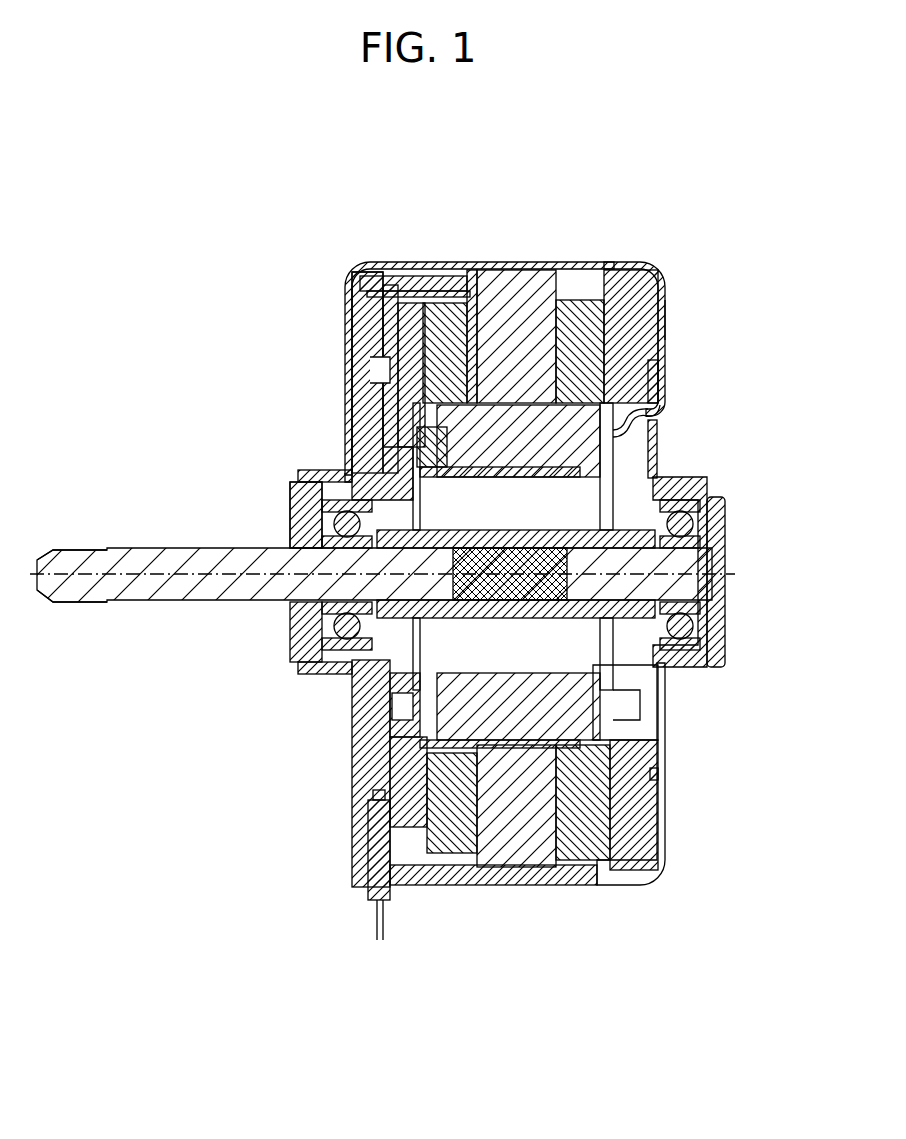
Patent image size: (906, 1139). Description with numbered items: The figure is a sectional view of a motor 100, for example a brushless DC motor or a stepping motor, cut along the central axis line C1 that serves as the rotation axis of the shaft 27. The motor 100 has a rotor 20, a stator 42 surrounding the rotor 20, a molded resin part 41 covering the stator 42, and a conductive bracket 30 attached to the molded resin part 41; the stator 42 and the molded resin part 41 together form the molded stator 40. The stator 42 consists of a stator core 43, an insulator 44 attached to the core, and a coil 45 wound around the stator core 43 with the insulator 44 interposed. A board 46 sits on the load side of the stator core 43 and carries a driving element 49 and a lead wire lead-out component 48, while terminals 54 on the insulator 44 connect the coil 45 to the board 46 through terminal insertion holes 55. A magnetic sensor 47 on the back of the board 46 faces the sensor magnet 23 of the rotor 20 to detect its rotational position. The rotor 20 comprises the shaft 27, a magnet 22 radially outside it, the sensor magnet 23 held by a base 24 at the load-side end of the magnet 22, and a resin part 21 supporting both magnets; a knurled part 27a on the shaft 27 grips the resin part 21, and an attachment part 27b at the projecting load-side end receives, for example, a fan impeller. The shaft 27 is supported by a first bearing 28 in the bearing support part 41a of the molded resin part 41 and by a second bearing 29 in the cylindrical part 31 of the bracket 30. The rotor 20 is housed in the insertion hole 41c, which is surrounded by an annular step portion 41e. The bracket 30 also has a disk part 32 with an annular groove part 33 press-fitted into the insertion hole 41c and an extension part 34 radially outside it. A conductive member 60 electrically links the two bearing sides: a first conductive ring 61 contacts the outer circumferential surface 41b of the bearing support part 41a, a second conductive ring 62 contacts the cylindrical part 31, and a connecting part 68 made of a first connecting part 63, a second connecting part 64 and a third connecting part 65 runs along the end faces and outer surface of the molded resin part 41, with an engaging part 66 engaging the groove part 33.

The motor 100 is at (730, 242).
The rotor 20 is at (225, 535).
The resin part 21 is at (335, 622).
The magnet 22 is at (507, 718).
The sensor magnet 23 is at (400, 732).
The base 24 is at (656, 752).
The shaft 27 is at (132, 600).
The knurled part 27a is at (605, 598).
The attachment part 27b is at (88, 550).
The first bearing 28 is at (300, 512).
The second bearing 29 is at (722, 502).
The bracket 30 is at (672, 460).
The cylindrical part 31 is at (705, 480).
The disk part 32 is at (658, 455).
The groove part 33 is at (660, 362).
The extension part 34 is at (662, 400).
The molded stator 40 is at (356, 320).
The molded resin part 41 is at (362, 336).
The bearing support part 41a is at (300, 492).
The outer circumferential surface 41b is at (333, 470).
The insertion hole 41c is at (610, 702).
The step portion 41e is at (300, 668).
The stator 42 is at (665, 302).
The stator core 43 is at (512, 300).
The insulator 44 is at (585, 300).
The coil 45 is at (592, 808).
The board 46 is at (400, 760).
The magnetic sensor 47 is at (400, 708).
The lead wire lead-out component 48 is at (370, 852).
The driving element 49 is at (362, 405).
The terminal 54 is at (345, 283).
The terminal insertion hole 55 is at (388, 291).
The conductive member 60 is at (422, 262).
The first conductive ring 61 is at (318, 477).
The second conductive ring 62 is at (690, 488).
The first connecting part 63 is at (352, 370).
The second connecting part 64 is at (478, 272).
The third connecting part 65 is at (668, 322).
The engaging part 66 is at (655, 420).
The connecting part 68 is at (568, 264).
The central axis line C1 is at (178, 580).